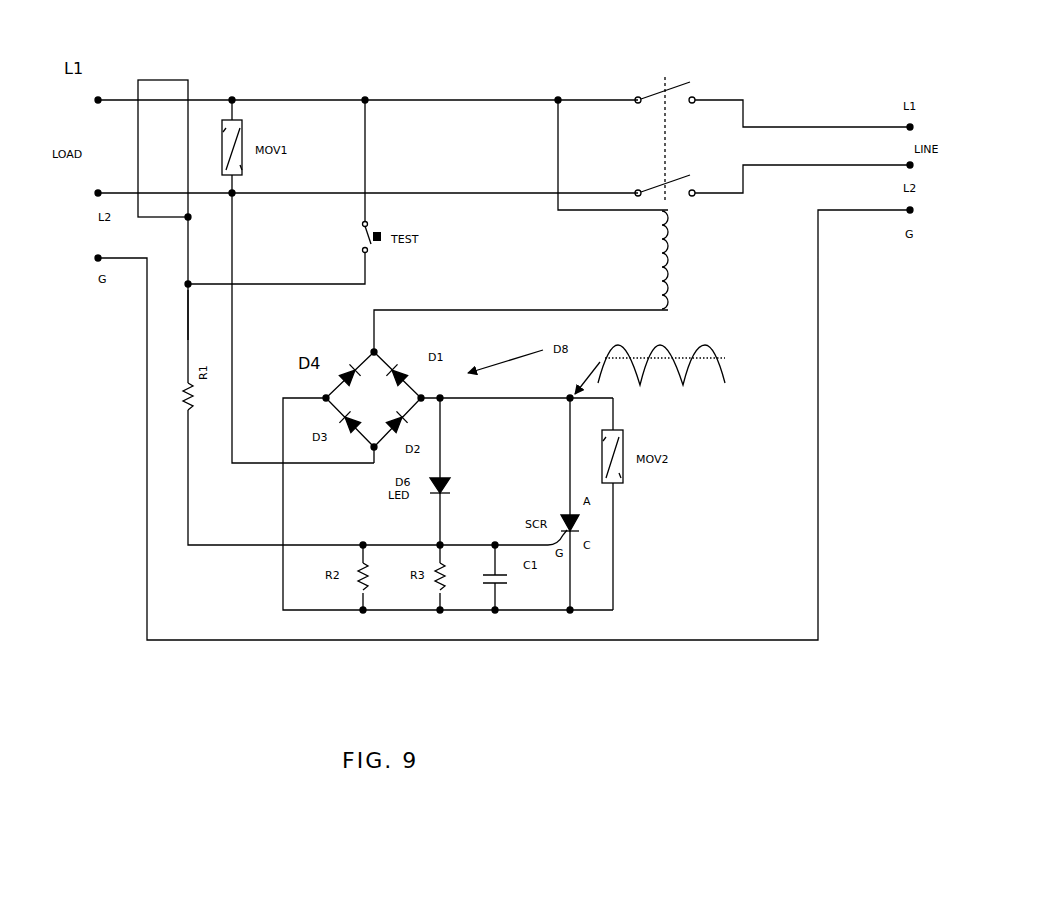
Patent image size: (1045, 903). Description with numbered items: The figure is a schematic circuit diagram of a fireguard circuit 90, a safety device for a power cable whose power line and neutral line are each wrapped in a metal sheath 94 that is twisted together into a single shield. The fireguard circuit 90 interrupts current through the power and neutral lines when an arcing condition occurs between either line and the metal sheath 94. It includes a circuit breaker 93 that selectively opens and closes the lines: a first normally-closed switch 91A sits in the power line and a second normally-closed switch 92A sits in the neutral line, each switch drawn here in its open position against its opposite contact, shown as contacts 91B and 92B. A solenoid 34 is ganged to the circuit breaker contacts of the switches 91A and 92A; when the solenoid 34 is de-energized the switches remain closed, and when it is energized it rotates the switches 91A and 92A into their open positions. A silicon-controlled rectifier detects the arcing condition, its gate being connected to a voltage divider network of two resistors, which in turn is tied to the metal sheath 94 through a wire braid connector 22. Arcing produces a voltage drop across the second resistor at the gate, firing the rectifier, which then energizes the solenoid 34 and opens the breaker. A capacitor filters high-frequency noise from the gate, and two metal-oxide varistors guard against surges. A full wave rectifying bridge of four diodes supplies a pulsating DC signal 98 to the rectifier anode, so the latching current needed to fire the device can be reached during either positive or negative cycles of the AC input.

The wire braid connector 22 is at (187, 307).
The solenoid 34 is at (680, 285).
The fireguard circuit 90 is at (648, 681).
The first normally-closed switch 91A is at (660, 85).
The first line contact 91B is at (726, 95).
The second normally-closed switch 92A is at (660, 180).
The second line contact 92B is at (730, 195).
The circuit breaker 93 is at (580, 72).
The metal sheath 94 is at (165, 74).
The pulsating DC signal 98 is at (701, 403).